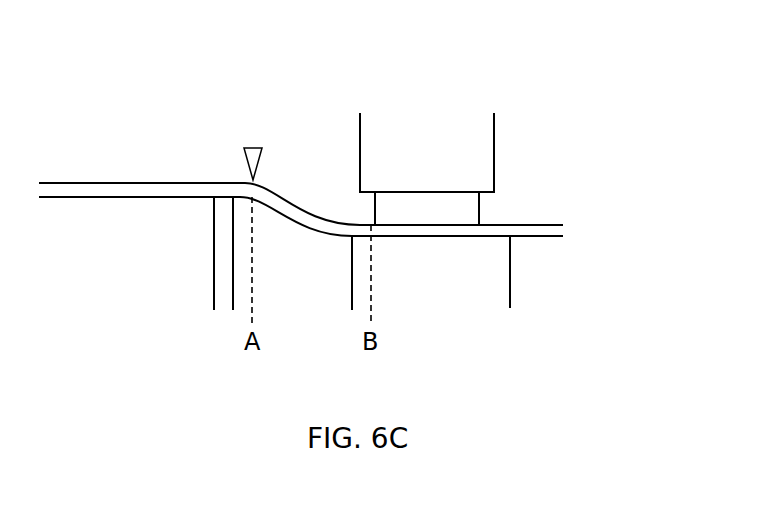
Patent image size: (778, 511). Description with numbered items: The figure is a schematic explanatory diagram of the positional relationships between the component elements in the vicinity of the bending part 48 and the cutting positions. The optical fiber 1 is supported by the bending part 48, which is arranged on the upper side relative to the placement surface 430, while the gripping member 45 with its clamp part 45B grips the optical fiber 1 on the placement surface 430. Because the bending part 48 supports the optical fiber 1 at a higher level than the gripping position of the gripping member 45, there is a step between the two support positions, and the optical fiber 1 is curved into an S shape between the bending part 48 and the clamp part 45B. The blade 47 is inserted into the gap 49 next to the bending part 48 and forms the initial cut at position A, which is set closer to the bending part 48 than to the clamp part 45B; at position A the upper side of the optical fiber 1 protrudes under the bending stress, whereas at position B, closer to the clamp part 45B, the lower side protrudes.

The optical fiber 1 is at (120, 183).
The blade 47 is at (252, 147).
The gripping member 45 is at (472, 90).
The clamp part 45B is at (383, 208).
The bending part 48 is at (222, 242).
The gap 49 is at (288, 312).
The placement surface 430 is at (482, 235).